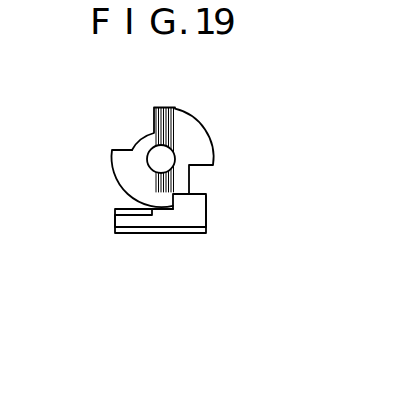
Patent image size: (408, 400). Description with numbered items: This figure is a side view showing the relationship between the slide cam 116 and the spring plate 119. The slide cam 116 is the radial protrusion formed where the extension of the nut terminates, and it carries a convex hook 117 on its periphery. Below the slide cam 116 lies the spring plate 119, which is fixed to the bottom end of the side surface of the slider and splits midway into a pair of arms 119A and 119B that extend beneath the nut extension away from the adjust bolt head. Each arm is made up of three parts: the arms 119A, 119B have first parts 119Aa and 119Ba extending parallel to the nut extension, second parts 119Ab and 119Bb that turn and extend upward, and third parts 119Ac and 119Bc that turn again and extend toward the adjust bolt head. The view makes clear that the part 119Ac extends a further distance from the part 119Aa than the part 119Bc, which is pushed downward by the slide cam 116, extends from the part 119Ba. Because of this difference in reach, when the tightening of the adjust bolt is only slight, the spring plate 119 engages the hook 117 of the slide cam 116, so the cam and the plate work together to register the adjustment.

The slide cam 116 is at (143, 144).
The convex hook 117 is at (193, 129).
The spring plate 119 is at (148, 234).
The first arm 119A is at (200, 190).
The first part of arm 119A 119Aa is at (193, 234).
The second part of arm 119A 119Ab is at (206, 207).
The third part of arm 119A 119Ac is at (197, 189).
The second arm 119B is at (116, 208).
The first part of arm 119B 119Ba is at (120, 234).
The second part of arm 119B 119Bb is at (115, 220).
The third part of arm 119B 119Bc is at (115, 215).